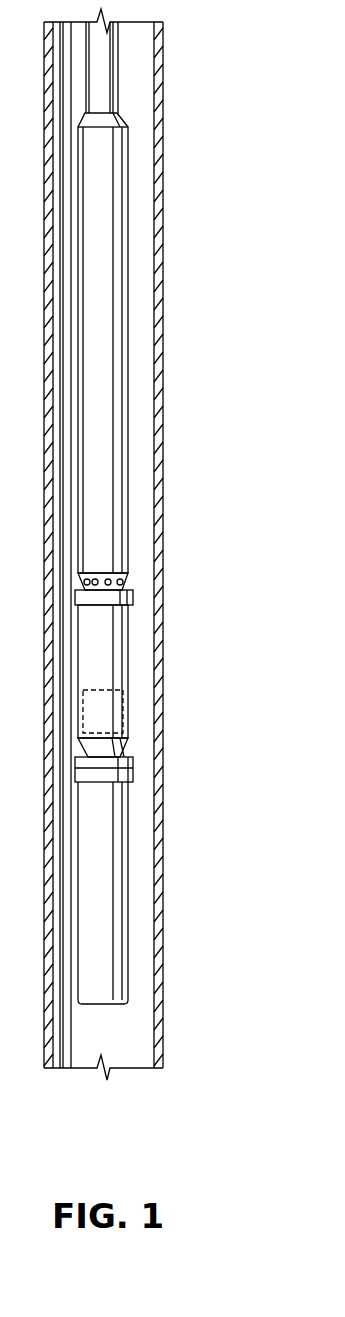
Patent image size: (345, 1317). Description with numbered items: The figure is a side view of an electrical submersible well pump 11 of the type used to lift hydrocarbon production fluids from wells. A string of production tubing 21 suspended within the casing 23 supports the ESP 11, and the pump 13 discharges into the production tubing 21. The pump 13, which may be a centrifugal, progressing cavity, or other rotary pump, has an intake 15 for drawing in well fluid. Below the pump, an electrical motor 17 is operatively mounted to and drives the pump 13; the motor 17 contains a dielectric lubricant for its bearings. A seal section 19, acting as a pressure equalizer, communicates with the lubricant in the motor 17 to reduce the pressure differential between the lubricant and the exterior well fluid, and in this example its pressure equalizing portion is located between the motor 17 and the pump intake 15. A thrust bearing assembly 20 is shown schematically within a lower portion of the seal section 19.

The electrical submersible well pump 11 is at (163, 513).
The pump 13 is at (102, 438).
The intake 15 is at (128, 585).
The electrical motor 17 is at (97, 817).
The seal section 19 is at (97, 633).
The thrust bearing assembly 20 is at (110, 718).
The production tubing 21 is at (100, 65).
The casing 23 is at (163, 292).